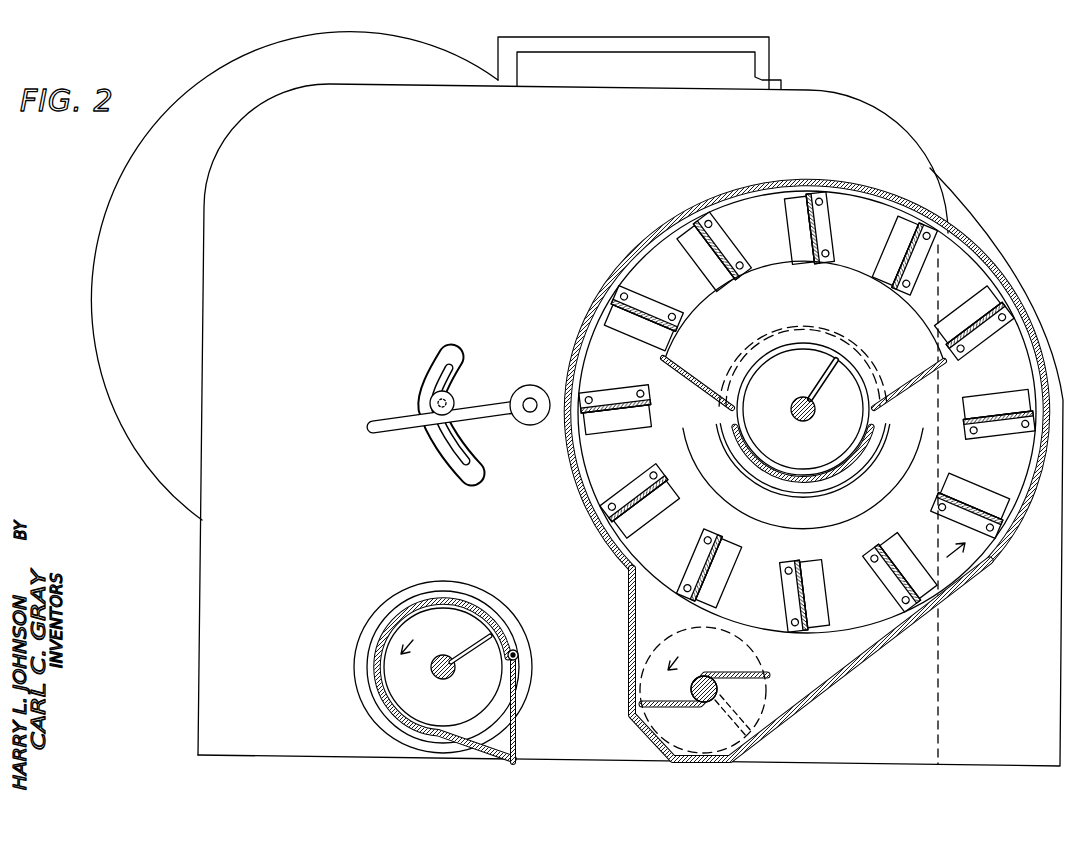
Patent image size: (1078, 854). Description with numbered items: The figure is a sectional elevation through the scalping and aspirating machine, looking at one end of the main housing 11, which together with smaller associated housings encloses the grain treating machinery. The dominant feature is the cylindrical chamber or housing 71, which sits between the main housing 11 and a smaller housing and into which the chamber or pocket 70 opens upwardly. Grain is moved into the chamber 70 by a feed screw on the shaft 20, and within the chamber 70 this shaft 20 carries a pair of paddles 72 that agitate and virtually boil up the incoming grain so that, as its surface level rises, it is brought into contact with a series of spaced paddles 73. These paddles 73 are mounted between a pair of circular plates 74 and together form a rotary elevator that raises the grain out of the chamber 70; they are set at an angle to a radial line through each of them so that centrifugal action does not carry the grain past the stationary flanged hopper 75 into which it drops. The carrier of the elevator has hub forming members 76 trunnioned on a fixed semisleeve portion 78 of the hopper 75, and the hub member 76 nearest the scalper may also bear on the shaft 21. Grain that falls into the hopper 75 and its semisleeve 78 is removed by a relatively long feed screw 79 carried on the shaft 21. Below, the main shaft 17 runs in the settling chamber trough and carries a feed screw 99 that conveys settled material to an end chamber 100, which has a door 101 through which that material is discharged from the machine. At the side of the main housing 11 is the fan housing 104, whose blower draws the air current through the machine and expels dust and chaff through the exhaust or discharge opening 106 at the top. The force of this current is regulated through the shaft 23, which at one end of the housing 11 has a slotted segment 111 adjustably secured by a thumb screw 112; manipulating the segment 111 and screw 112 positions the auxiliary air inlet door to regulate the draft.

The main housing 11 is at (611, 425).
The main shaft 17 is at (429, 667).
The shaft 20 is at (717, 693).
The shaft 21 is at (815, 411).
The shaft 23 is at (530, 402).
The chamber or pocket 70 is at (788, 697).
The cylindrical chamber or housing 71 is at (578, 482).
The paddles 72 is at (745, 672).
The paddles 73 is at (627, 493).
The circular plates 74 is at (638, 537).
The stationary flanged hopper 75 is at (803, 334).
The hub forming members 76 is at (905, 453).
The fixed semisleeve portion 78 is at (846, 476).
The feed screw 79 is at (830, 375).
The feed screw 99 is at (417, 692).
The end chamber 100 is at (475, 612).
The door 101 is at (518, 723).
The fan housing 104 is at (175, 463).
The exhaust or discharge opening 106 is at (760, 50).
The slotted segment 111 is at (460, 375).
The thumb screw 112 is at (451, 374).